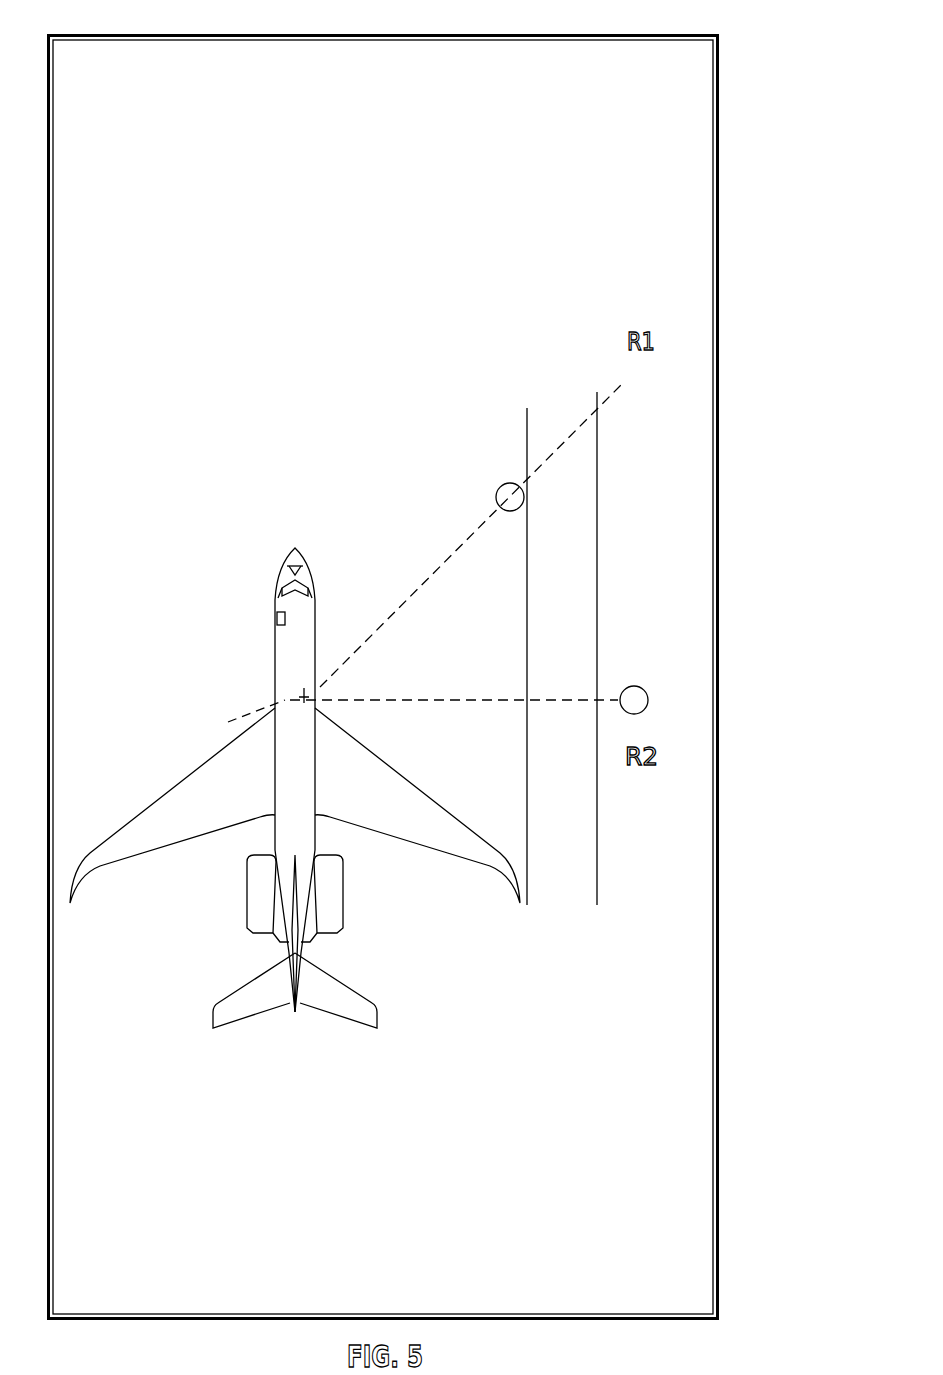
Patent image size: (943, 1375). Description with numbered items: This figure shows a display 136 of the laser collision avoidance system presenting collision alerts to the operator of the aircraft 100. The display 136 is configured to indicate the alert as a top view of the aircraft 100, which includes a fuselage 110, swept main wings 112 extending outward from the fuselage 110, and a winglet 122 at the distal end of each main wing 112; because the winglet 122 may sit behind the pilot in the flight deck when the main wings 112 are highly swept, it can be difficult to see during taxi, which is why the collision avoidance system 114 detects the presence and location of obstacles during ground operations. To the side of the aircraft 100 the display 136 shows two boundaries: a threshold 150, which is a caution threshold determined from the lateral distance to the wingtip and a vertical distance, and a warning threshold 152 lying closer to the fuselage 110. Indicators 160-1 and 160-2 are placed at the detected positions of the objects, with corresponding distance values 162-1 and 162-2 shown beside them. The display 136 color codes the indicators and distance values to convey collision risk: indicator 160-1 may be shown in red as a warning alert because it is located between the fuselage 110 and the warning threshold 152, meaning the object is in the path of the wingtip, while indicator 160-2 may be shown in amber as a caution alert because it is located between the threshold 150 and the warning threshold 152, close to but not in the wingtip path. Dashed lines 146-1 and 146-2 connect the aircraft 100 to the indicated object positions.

The aircraft 100 is at (295, 782).
The fuselage 110 is at (275, 668).
The main wings 112 is at (295, 834).
The collision avoidance system 114 is at (245, 714).
The winglet 122 is at (508, 898).
The display 136 is at (745, 28).
The first projected path line 146-1 is at (410, 698).
The second projected path line 146-2 is at (402, 600).
The threshold 150 is at (598, 503).
The warning threshold 152 is at (528, 588).
The indicator 160-1 is at (505, 512).
The indicator 160-2 is at (635, 686).
The distance value 162-1 is at (372, 500).
The distance value 162-2 is at (472, 741).